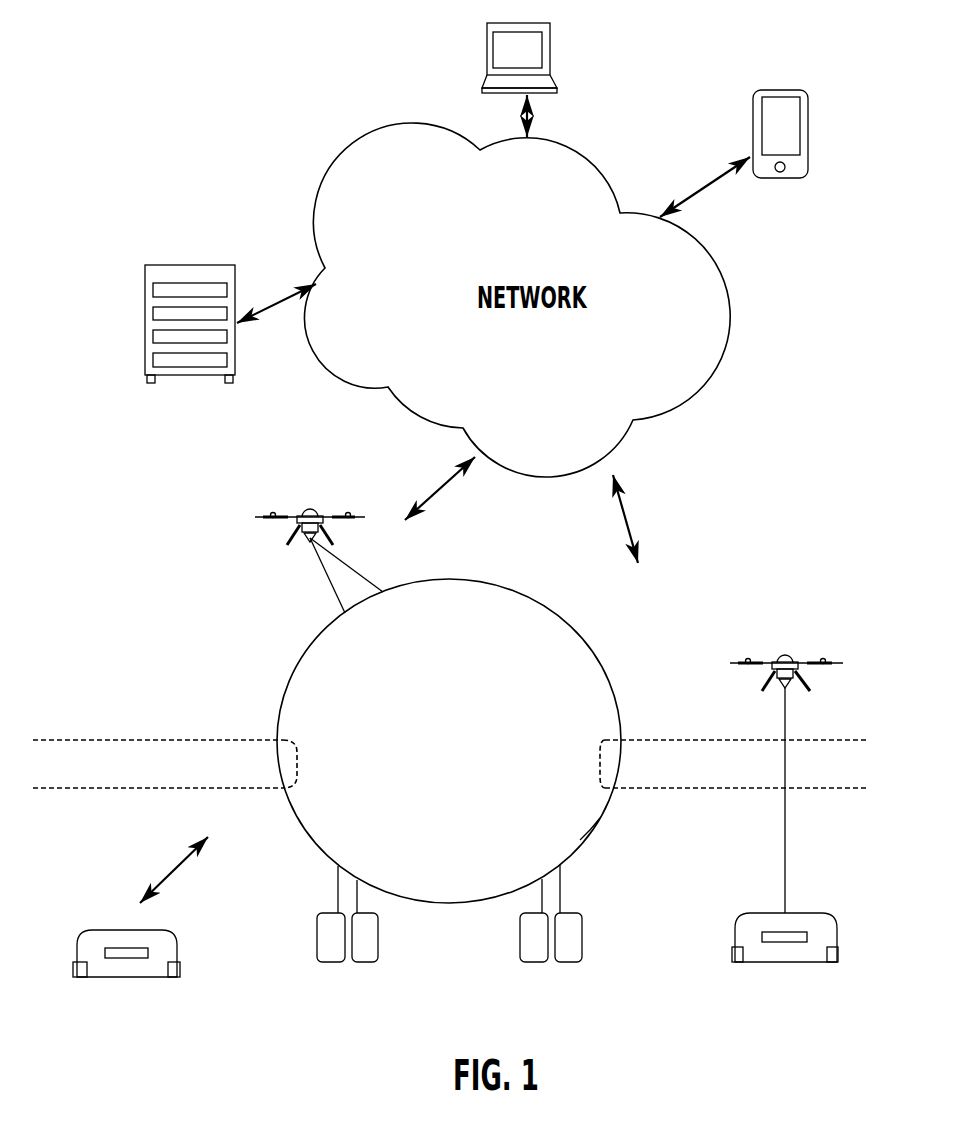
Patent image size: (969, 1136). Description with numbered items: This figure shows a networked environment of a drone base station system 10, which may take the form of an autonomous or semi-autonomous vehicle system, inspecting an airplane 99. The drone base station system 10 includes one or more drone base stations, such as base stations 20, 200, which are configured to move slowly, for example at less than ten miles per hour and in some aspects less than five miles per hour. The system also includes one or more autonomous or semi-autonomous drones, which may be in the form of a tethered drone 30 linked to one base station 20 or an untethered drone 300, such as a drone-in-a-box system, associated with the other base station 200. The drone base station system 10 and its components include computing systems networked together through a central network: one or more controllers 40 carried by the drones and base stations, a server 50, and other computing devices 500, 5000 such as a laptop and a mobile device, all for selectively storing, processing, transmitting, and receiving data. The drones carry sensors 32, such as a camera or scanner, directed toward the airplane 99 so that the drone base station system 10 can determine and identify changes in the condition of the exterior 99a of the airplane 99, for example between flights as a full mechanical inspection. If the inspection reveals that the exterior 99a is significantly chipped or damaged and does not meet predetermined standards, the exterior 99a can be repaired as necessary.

The drone base station system 10 is at (790, 423).
The base station 20 is at (737, 923).
The tethered drone 30 is at (778, 660).
The sensor 32 is at (307, 540).
The controller 40 is at (307, 512).
The server 50 is at (178, 265).
The airplane 99 is at (582, 660).
The exterior 99a is at (600, 818).
The base station 200 is at (98, 935).
The untethered drone 300 is at (283, 522).
The computing device 500 is at (551, 50).
The computing device 5000 is at (782, 88).